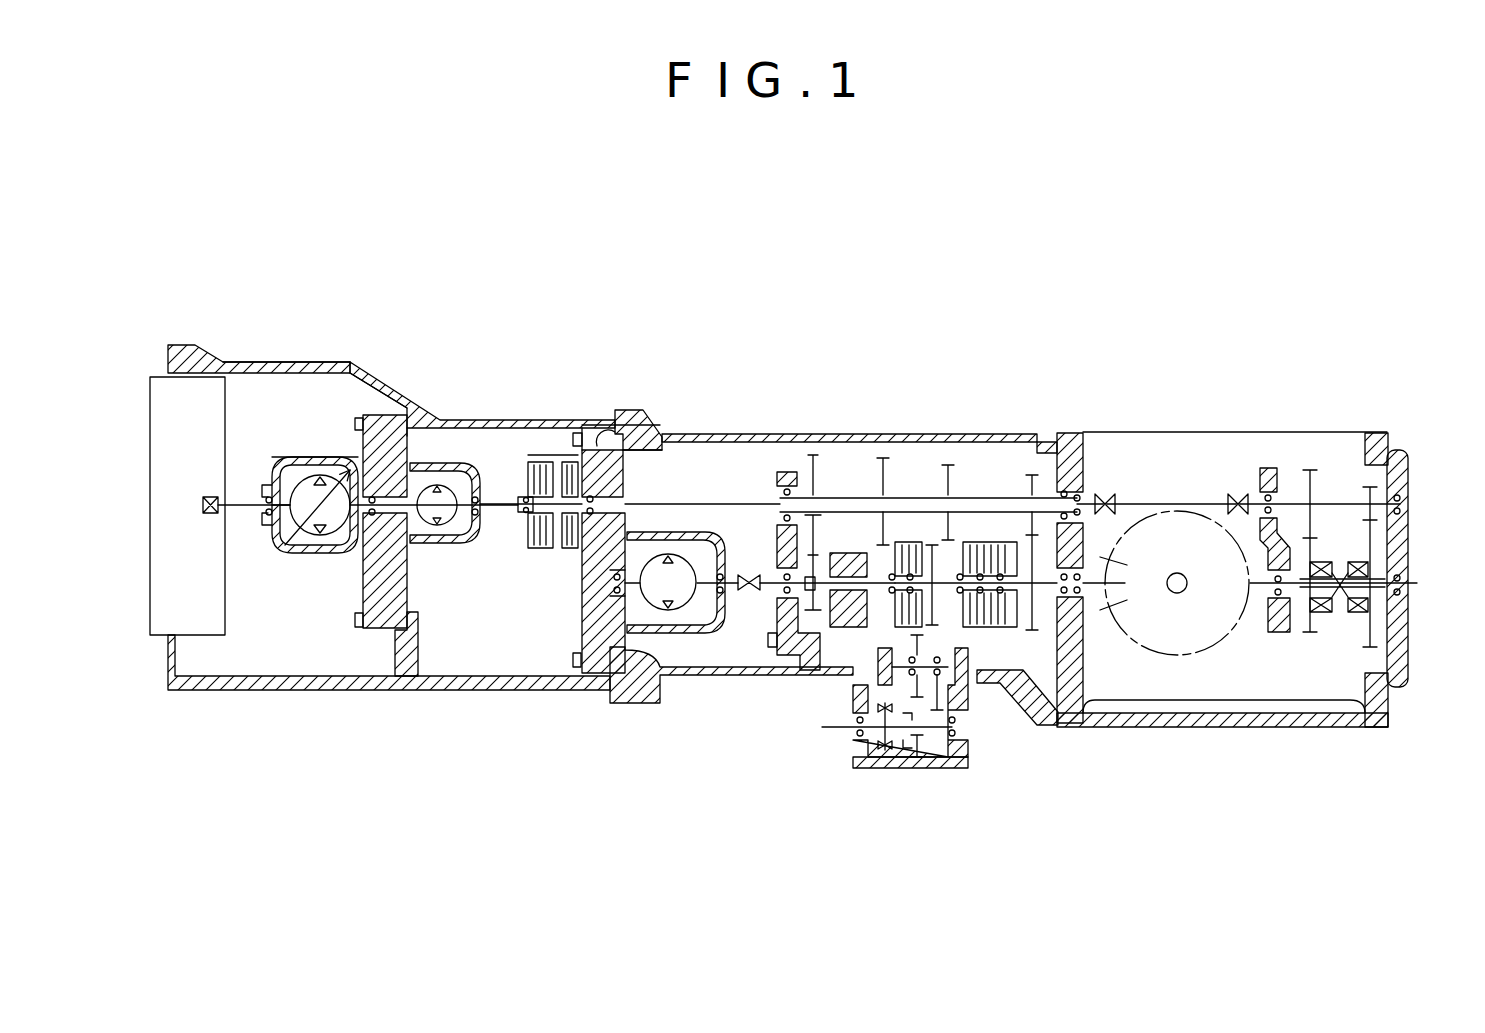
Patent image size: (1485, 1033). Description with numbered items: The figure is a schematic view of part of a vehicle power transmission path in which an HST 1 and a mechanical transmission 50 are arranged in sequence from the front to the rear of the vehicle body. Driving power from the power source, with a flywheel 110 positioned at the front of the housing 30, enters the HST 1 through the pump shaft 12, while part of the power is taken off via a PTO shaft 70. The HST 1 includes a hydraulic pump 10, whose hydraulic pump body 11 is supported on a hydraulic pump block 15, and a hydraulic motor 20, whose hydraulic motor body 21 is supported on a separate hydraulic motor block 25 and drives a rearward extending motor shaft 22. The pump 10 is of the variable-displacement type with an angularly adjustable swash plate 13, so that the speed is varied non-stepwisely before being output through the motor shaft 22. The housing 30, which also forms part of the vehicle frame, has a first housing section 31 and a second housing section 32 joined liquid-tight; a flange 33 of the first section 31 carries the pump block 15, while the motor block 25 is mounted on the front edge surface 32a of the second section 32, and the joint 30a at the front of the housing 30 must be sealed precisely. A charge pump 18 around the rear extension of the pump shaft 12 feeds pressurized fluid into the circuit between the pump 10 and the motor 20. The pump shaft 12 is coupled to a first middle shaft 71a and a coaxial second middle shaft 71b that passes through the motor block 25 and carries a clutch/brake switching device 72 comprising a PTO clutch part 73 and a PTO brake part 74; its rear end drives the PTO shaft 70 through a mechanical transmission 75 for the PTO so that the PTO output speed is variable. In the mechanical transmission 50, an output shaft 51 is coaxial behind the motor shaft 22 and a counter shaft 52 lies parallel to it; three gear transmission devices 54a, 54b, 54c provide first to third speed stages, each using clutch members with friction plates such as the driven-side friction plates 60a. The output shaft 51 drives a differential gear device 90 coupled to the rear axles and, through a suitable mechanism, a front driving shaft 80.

The HST 1 is at (494, 396).
The hydraulic pump 10 is at (292, 422).
The hydraulic pump body 11 is at (328, 457).
The pump shaft 12 is at (247, 503).
The angularly adjustable swash plate 13 is at (340, 515).
The hydraulic pump block 15 is at (395, 425).
The charge pump 18 is at (443, 462).
The hydraulic motor 20 is at (695, 520).
The hydraulic motor body 21 is at (682, 537).
The motor shaft 22 is at (733, 590).
The hydraulic motor block 25 is at (588, 456).
The housing 30 is at (637, 847).
The joint 30a is at (166, 358).
The first housing section 31 is at (560, 686).
The second housing section 32 is at (683, 672).
The front edge surface 32a is at (587, 432).
The flange 33 is at (403, 637).
The mechanical transmission 50 is at (1003, 642).
The output shaft 51 is at (847, 672).
The counter shaft 52 is at (832, 492).
The gear transmission device for the first speed stage 54a is at (1019, 482).
The gear transmission device for the second speed stage 54b is at (958, 482).
The gear transmission device for the third speed stage 54c is at (895, 472).
The driven-side friction plates 60a is at (787, 640).
The PTO shaft 70 is at (1414, 583).
The first middle shaft 71a is at (505, 503).
The second middle shaft 71b is at (737, 500).
The clutch/brake switching device 72 is at (477, 840).
The PTO clutch part 73 is at (523, 560).
The PTO brake part 74 is at (570, 560).
The mechanical transmission for the PTO 75 is at (1342, 627).
The front driving shaft 80 is at (837, 728).
The differential gear device 90 is at (1183, 667).
The flywheel 110 is at (203, 613).